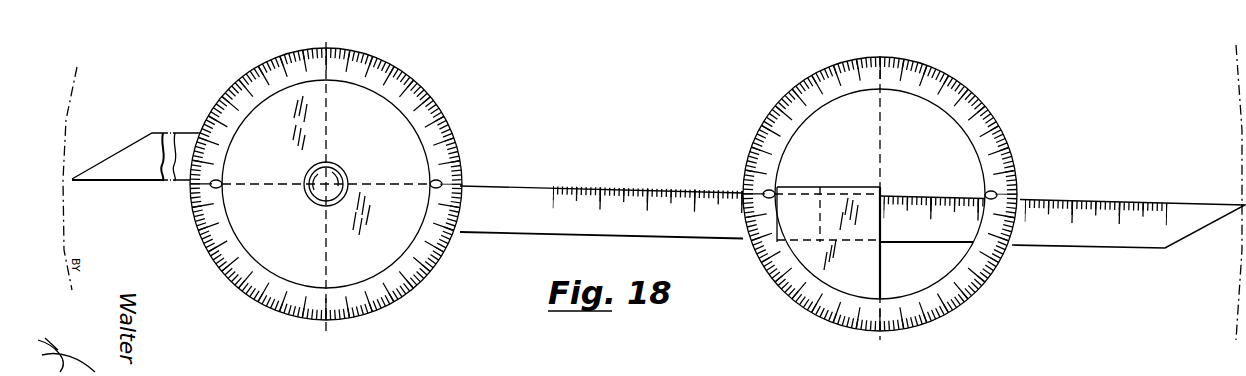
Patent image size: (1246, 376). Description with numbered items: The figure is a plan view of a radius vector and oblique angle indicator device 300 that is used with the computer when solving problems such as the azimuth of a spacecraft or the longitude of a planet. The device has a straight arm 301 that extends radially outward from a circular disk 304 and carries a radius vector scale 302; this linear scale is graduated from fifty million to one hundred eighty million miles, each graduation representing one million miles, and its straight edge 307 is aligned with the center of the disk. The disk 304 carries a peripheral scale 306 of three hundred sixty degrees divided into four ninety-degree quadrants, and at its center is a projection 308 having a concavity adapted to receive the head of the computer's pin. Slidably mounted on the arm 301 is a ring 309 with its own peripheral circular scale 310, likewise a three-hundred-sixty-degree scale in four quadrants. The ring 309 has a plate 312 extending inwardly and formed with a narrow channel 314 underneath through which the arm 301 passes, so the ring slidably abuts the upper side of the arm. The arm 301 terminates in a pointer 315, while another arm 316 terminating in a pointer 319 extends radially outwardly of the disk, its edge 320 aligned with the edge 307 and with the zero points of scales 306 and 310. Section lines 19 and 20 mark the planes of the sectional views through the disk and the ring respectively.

The section line 19— 19 is at (326, 30).
The section line 20— 20 is at (880, 56).
The radius vector and oblique angle indicator device 300 is at (538, 245).
The straight arm 301 is at (538, 196).
The radius vector scale 302 is at (692, 212).
The circular disk 304 is at (425, 92).
The peripheral 360° scale 306 is at (370, 62).
The straight edge 307 is at (662, 188).
The projection 308 is at (318, 200).
The ring 309 is at (977, 95).
The peripheral circular scale 310 is at (792, 102).
The plate 312 is at (892, 156).
The narrow channel 314 is at (852, 245).
The pointer 315 is at (1230, 173).
The arm 316 is at (152, 165).
The pointer 319 is at (88, 165).
The edge 320 is at (132, 184).